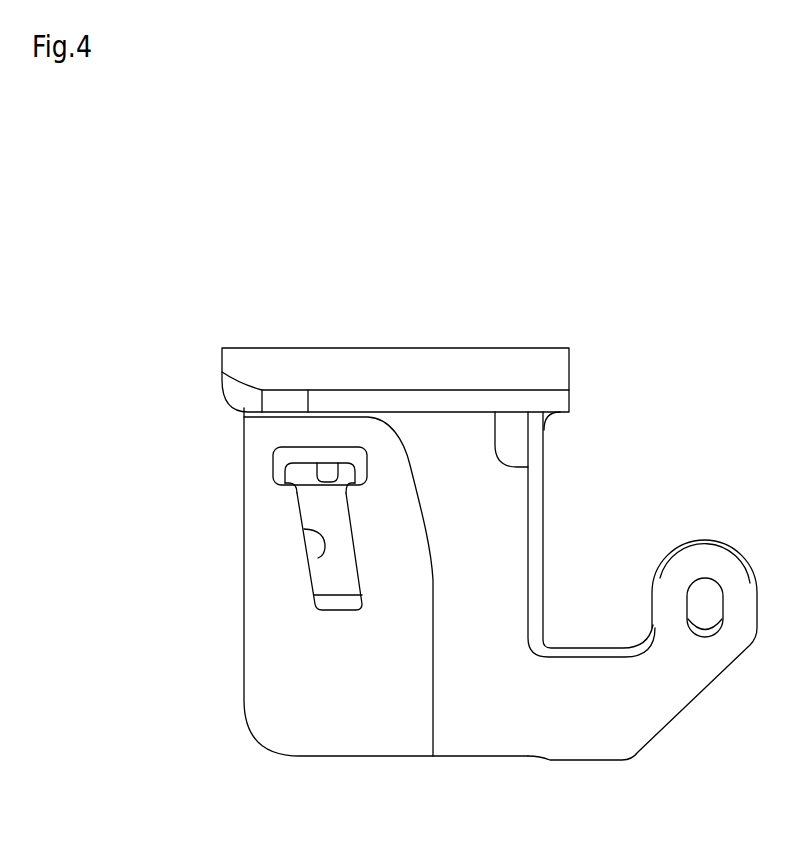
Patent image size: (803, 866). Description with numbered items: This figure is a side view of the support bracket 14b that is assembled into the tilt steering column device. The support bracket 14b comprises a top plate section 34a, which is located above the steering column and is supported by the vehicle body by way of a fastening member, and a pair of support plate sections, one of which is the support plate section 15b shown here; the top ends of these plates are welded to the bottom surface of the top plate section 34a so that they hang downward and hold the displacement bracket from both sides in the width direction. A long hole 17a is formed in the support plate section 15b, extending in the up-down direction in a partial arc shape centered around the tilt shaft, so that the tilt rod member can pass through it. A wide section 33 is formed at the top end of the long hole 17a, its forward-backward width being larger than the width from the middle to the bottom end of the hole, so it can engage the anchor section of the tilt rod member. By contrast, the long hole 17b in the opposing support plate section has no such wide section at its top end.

The support bracket 14b is at (528, 347).
The top plate section 34a is at (538, 374).
The support plate section 15b is at (393, 710).
The wide section 33 is at (278, 472).
The long hole 17b is at (335, 478).
The long hole 17a is at (322, 553).